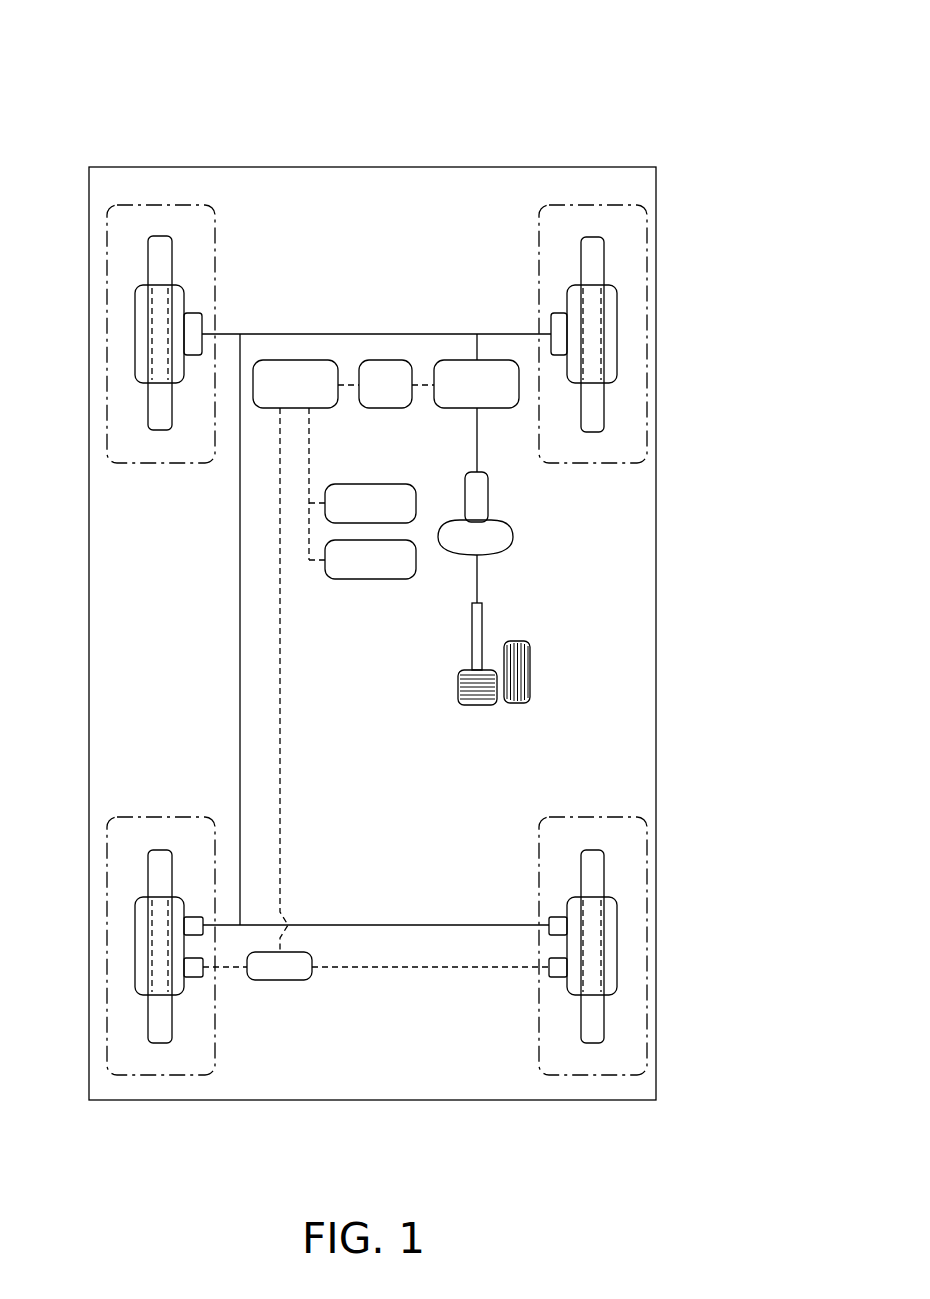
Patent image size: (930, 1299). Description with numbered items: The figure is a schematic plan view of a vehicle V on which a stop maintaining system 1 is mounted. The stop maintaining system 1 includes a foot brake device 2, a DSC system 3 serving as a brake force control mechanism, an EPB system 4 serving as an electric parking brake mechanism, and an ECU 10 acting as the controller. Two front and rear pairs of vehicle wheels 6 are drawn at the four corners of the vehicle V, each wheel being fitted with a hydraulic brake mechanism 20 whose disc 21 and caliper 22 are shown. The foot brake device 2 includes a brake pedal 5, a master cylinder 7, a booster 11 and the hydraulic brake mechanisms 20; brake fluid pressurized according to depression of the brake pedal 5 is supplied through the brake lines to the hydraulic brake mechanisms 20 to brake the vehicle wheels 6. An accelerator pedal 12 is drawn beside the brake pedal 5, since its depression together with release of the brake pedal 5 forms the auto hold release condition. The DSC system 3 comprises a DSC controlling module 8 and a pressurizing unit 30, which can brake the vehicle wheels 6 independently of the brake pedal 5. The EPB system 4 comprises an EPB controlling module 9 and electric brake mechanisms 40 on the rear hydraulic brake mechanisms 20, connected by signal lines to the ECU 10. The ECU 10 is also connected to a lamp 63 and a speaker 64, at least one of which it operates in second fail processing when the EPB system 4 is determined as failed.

The vehicle V is at (492, 83).
The stop maintaining system 1 is at (498, 140).
The foot brake device 2 is at (528, 556).
The DSC system 3 is at (388, 378).
The EPB system 4 is at (375, 1012).
The brake pedal 5 is at (458, 688).
The vehicle wheels 6 is at (157, 207).
The master cylinder 7 is at (488, 500).
The DSC controlling module 8 is at (375, 408).
The EPB controlling module 9 is at (293, 980).
The ECU 10 is at (290, 360).
The booster 11 is at (496, 556).
The accelerator pedal 12 is at (532, 668).
The hydraulic brake mechanisms 20 is at (371, 628).
The brake disc 21 is at (162, 250).
The brake caliper 22 is at (143, 336).
The pressurizing unit 30 is at (492, 408).
The electric brake mechanism 40 is at (196, 979).
The lamp 63 is at (374, 483).
The speaker 64 is at (374, 580).